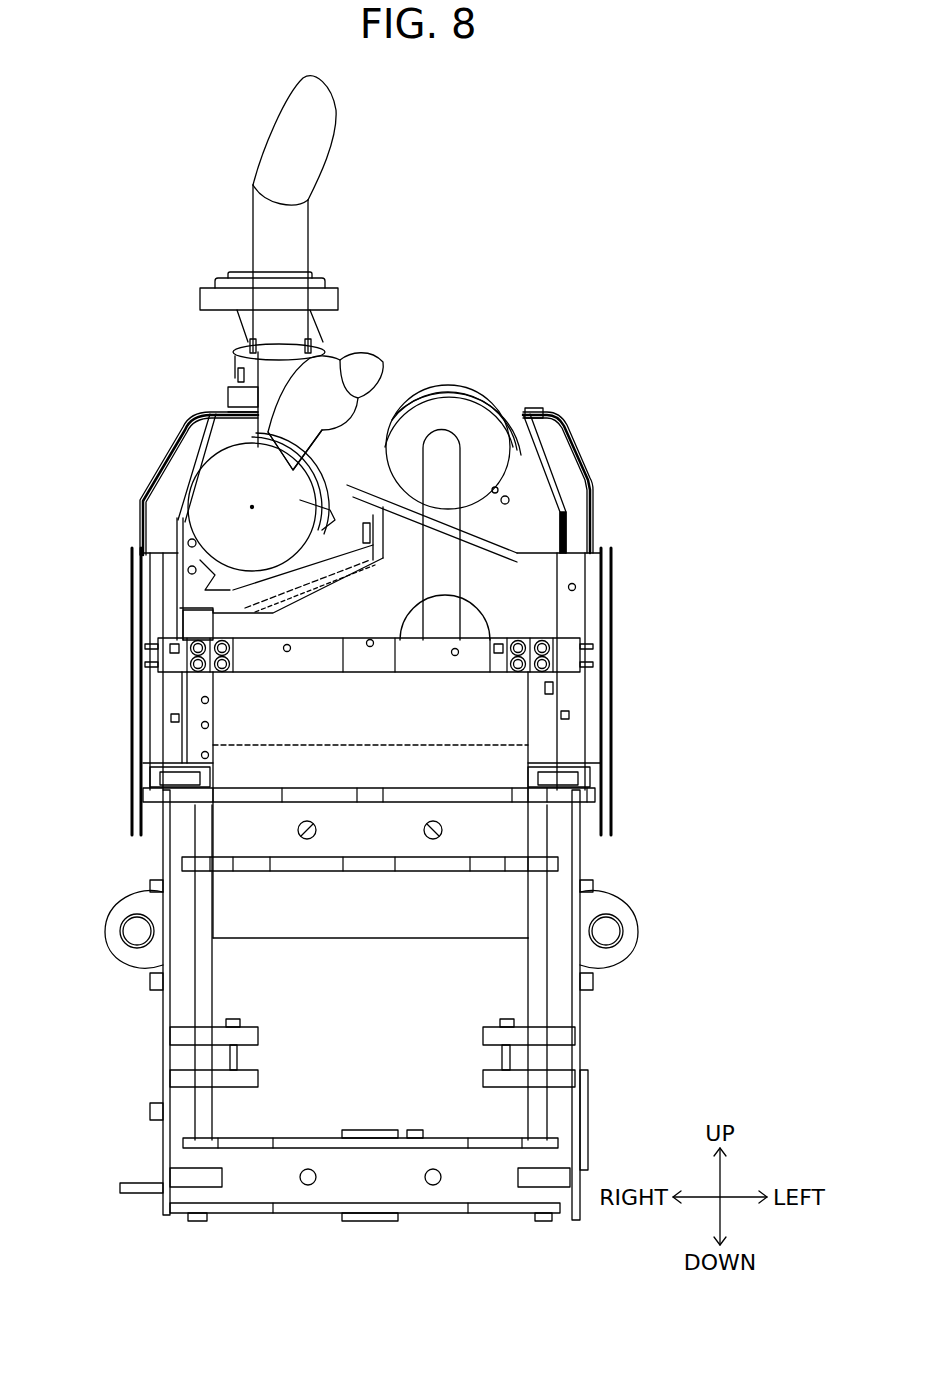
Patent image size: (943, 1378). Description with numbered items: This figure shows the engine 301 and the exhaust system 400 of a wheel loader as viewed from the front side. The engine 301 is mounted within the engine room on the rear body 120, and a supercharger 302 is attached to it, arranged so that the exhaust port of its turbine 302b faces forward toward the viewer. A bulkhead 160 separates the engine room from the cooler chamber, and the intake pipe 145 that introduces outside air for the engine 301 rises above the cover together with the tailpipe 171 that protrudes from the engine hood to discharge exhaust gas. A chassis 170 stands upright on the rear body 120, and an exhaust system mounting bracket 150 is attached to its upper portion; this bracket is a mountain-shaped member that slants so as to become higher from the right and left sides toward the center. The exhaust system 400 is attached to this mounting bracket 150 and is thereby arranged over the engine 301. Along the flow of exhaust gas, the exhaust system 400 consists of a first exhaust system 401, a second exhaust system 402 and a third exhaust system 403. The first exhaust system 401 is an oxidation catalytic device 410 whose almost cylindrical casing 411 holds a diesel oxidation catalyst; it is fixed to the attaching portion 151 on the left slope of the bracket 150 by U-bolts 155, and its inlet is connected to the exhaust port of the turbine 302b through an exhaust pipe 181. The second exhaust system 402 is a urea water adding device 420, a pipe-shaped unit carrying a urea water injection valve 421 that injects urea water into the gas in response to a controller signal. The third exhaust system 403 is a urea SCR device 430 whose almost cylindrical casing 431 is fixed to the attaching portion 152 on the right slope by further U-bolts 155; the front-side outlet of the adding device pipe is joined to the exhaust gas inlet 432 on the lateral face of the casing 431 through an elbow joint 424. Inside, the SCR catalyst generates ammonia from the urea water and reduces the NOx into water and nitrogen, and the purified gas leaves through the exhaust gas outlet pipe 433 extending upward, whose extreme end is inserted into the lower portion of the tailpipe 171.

The rear body 120 is at (580, 1012).
The intake pipe 145 is at (240, 340).
The exhaust system mounting bracket 150 is at (473, 543).
The attaching portion 151 is at (520, 508).
The attaching portion 152 is at (227, 580).
The U-bolts 155 is at (212, 557).
The bulkhead 160 is at (162, 527).
The chassis 170 is at (548, 697).
The tailpipe 171 is at (268, 222).
The exhaust pipe 181 is at (447, 577).
The engine 301 is at (467, 918).
The supercharger 302 is at (581, 617).
The turbine 302b is at (485, 630).
The exhaust system 400 is at (502, 243).
The first exhaust system 401 is at (495, 425).
The oxidation catalytic device 410 is at (495, 425).
The casing 411 is at (480, 428).
The second exhaust system 402 is at (368, 345).
The urea water adding device 420 is at (368, 345).
The urea water injection valve 421 is at (370, 360).
The elbow joint 424 is at (313, 380).
The third exhaust system 403 is at (190, 474).
The urea SCR device 430 is at (190, 474).
The casing 431 is at (202, 495).
The exhaust gas inlet 432 is at (225, 468).
The exhaust gas outlet pipe 433 is at (258, 382).